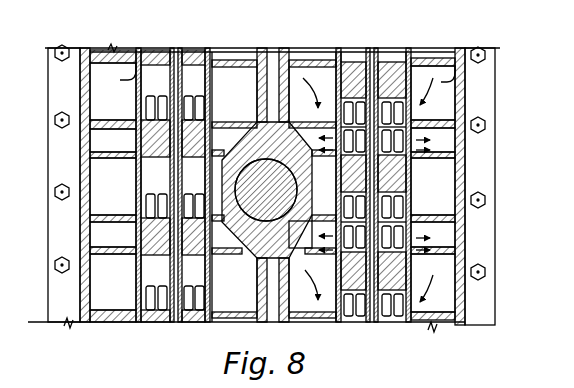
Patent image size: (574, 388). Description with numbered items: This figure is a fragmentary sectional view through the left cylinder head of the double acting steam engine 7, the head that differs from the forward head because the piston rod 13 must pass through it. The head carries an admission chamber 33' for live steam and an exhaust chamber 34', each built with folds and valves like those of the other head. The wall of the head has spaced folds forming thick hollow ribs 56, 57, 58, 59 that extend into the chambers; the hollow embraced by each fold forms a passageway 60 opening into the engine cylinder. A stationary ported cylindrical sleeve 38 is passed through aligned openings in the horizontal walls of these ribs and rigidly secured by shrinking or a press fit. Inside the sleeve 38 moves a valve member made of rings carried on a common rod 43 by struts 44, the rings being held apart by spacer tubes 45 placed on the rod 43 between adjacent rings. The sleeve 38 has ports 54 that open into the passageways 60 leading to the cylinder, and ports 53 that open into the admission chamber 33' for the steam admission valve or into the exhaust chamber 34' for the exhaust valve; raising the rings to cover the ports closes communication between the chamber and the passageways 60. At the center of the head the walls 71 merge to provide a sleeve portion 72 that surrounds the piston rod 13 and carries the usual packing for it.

The steam engine 7 is at (30, 187).
The piston rod 13 is at (252, 242).
The admission chamber 33' is at (503, 186).
The exhaust chamber 34' is at (50, 183).
The stationary ported cylindrical sleeve 38 is at (128, 68).
The rod 43 is at (176, 48).
The struts 44 is at (157, 52).
The spacer tubes 45 is at (167, 78).
The ports 53 is at (203, 116).
The ports 54 is at (432, 170).
The hollow rib 56 is at (452, 72).
The hollow rib 57 is at (445, 168).
The hollow rib 58 is at (445, 262).
The hollow rib 59 is at (447, 311).
The passageways 60 is at (100, 52).
The walls 71 is at (262, 52).
The sleeve portion 72 is at (298, 225).